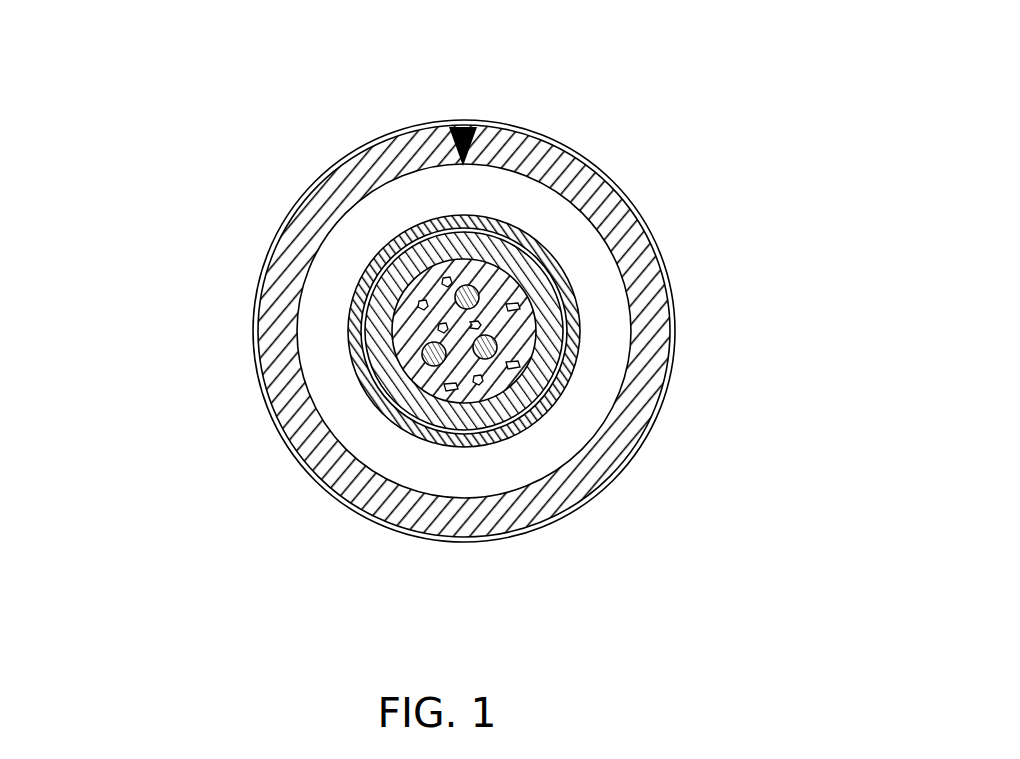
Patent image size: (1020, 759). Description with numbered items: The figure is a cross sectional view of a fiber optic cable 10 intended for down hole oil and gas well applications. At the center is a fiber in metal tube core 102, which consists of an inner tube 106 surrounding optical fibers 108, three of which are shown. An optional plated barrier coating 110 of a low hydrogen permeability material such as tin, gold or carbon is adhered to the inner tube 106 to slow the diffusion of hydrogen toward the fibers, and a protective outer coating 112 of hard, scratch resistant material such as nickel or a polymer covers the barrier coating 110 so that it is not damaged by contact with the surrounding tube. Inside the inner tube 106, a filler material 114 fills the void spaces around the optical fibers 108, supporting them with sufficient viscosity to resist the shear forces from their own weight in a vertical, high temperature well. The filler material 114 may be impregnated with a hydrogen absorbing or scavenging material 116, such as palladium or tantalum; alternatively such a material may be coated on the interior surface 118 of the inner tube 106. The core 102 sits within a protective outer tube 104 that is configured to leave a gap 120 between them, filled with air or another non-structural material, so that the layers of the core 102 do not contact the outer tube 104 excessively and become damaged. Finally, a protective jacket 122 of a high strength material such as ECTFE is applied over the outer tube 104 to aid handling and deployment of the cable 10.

The fiber optic cable 10 is at (670, 165).
The fiber in metal tube (FIMT) core 102 is at (463, 217).
The protective outer tube 104 is at (262, 256).
The inner tube 106 is at (505, 253).
The optical fibers 108 is at (428, 363).
The plated barrier coating 110 is at (425, 242).
The protective outer coating 112 is at (558, 278).
The filler material 114 is at (520, 330).
The hydrogen absorbing/scavenging material 116 is at (515, 366).
The interior surface of the inner tube 118 is at (477, 384).
The gap 120 is at (458, 122).
The protective jacket 122 is at (668, 377).